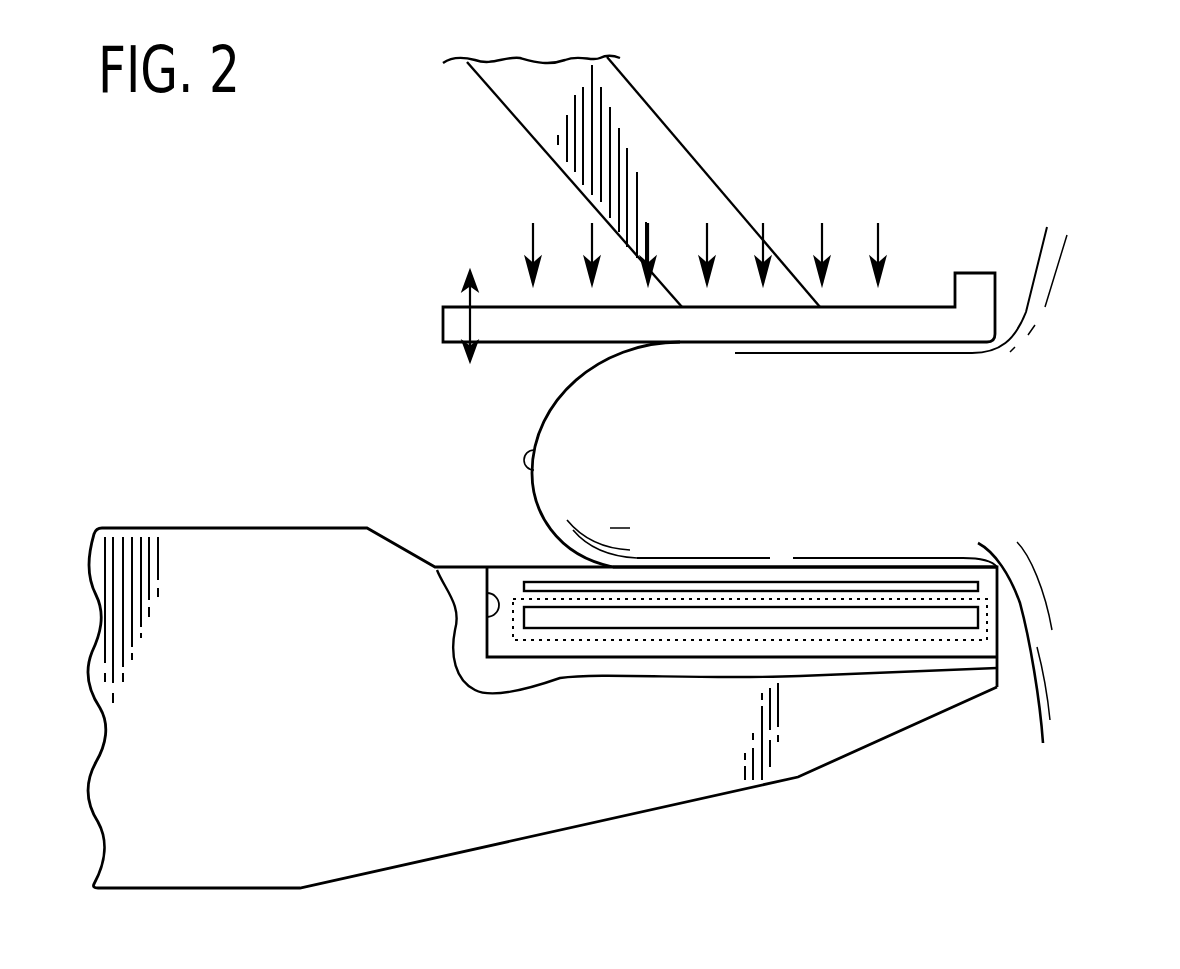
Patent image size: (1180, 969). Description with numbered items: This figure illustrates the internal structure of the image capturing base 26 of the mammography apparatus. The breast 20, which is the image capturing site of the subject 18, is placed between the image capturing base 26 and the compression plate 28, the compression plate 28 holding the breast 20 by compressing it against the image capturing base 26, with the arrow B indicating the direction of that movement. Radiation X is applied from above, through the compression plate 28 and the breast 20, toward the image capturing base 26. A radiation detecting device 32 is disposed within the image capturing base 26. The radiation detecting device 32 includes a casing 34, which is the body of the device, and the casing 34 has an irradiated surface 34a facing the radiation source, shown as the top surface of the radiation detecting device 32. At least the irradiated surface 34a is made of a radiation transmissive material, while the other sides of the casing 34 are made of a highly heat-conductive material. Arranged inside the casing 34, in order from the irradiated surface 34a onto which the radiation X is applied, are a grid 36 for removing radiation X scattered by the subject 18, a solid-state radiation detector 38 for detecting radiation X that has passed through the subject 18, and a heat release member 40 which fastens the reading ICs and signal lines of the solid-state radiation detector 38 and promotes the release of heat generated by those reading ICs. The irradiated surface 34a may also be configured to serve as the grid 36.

The subject 18 is at (807, 485).
The breast 20 is at (553, 437).
The image capturing base 26 is at (662, 777).
The compression plate 28 is at (973, 288).
The radiation detecting device 32 is at (695, 614).
The casing 34 is at (487, 627).
The irradiated surface 34a is at (740, 563).
The grid 36 is at (903, 587).
The solid-state radiation detector 38 is at (867, 617).
The heat release member 40 is at (580, 641).
The radiation X is at (532, 259).
The plate movement direction B is at (451, 311).